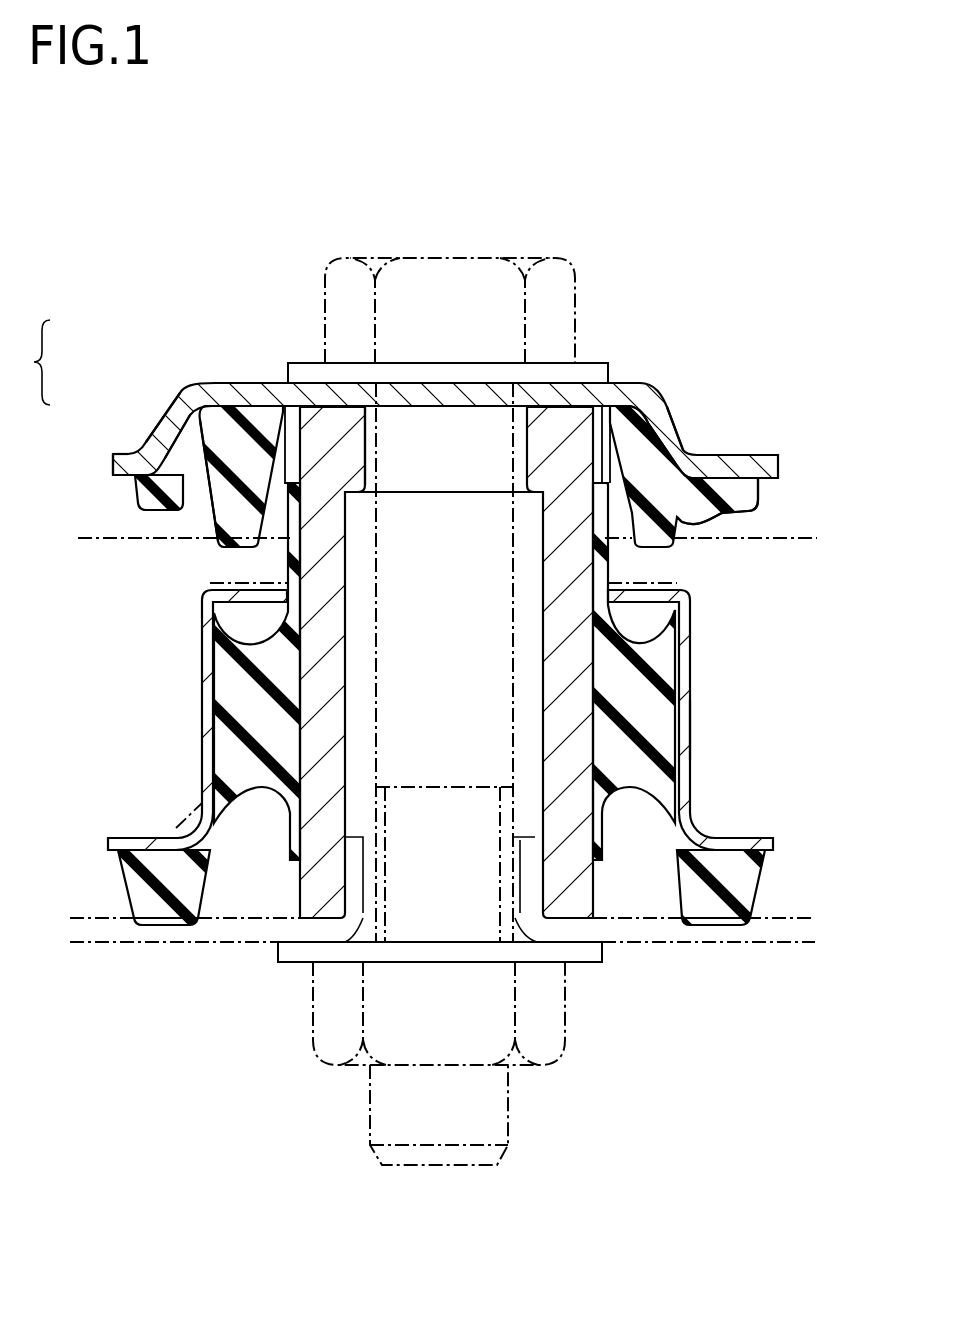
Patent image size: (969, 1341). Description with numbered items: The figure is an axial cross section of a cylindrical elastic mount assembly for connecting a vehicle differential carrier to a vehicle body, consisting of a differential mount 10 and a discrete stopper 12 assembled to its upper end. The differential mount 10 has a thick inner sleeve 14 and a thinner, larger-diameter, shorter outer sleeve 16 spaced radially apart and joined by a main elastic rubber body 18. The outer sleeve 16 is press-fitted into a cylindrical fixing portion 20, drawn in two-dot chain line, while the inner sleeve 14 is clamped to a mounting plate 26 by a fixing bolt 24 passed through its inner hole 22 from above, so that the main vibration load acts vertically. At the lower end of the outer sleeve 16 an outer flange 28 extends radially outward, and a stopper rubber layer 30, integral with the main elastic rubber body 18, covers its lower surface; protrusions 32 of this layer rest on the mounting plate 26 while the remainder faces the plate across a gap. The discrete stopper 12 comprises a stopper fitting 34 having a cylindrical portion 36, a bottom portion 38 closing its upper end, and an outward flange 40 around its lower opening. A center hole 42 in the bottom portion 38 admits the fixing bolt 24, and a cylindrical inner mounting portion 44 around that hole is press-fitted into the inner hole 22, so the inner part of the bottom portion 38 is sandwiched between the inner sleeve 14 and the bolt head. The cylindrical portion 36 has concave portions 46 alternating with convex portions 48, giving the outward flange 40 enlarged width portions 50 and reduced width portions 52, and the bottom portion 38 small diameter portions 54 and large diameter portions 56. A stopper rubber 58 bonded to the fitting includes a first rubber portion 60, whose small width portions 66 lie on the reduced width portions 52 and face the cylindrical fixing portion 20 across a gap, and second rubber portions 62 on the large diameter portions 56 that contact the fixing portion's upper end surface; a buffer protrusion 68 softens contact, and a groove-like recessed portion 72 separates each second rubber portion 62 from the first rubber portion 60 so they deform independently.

The differential mount 10 is at (733, 712).
The discrete stopper 12 is at (672, 372).
The inner sleeve 14 is at (290, 890).
The outer sleeve 16 is at (199, 742).
The main elastic rubber body 18 is at (632, 803).
The cylindrical fixing portion 20 is at (108, 536).
The inner hole 22 is at (345, 632).
The fixing bolt 24 is at (483, 277).
The mounting plate 26 is at (175, 943).
The outer flange 28 is at (725, 843).
The stopper rubber layer 30 is at (762, 887).
The protrusions 32 is at (153, 910).
The stopper fitting 34 is at (27, 362).
The cylindrical portion 36 is at (152, 428).
The bottom portion 38 is at (253, 380).
The outward flange 40 is at (133, 449).
The center hole 42 is at (595, 397).
The cylindrical inner mounting portion 44 is at (363, 440).
The concave portions 46 is at (677, 433).
The convex portions 48 is at (160, 422).
The enlarged width portions 50 is at (750, 462).
The reduced width portions 52 is at (128, 465).
The small diameter portions 54 is at (598, 410).
The large diameter portions 56 is at (272, 393).
The stopper rubber 58 is at (773, 498).
The first rubber portion 60 is at (740, 514).
The second rubber portions 62 is at (217, 550).
The small width portions 66 is at (153, 503).
The buffer protrusion 68 is at (697, 528).
The recessed portion 72 is at (193, 503).